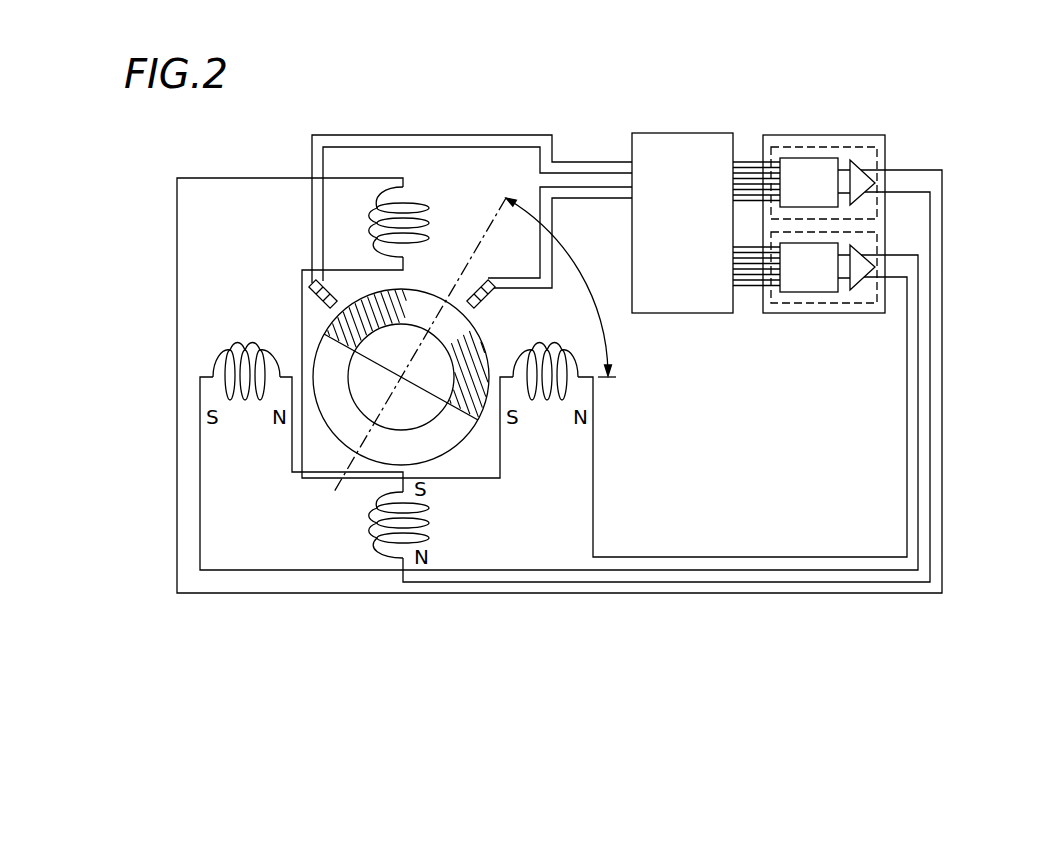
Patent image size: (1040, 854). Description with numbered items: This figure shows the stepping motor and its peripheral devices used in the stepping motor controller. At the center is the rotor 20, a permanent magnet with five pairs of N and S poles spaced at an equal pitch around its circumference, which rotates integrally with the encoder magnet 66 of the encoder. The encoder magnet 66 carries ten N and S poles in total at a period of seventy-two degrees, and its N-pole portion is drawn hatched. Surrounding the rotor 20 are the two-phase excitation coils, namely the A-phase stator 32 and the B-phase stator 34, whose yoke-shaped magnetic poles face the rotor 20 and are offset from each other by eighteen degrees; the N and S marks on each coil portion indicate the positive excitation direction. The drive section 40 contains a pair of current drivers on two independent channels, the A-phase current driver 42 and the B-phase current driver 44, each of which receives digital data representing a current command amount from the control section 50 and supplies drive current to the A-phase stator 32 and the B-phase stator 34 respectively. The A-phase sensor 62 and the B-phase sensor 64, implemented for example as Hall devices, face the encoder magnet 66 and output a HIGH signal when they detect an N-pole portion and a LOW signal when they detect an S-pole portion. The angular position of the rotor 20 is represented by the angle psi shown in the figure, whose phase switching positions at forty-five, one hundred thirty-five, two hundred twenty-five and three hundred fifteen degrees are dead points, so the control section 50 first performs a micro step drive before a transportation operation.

The rotor 20 is at (357, 368).
The A-phase stator 32 is at (398, 182).
The B-phase stator 34 is at (604, 383).
The drive section 40 is at (881, 200).
The A-phase current driver 42 is at (870, 210).
The B-phase current driver 44 is at (870, 293).
The control section 50 is at (693, 133).
The A-phase sensor 62 is at (303, 283).
The B-phase sensor 64 is at (487, 282).
The encoder magnet 66 is at (442, 443).